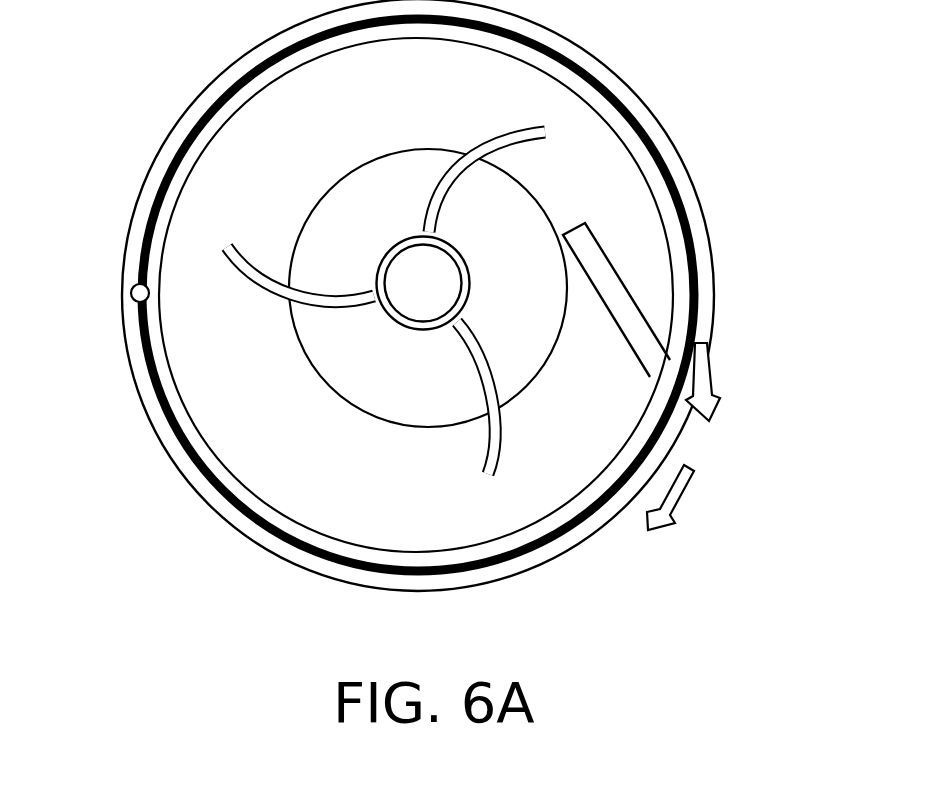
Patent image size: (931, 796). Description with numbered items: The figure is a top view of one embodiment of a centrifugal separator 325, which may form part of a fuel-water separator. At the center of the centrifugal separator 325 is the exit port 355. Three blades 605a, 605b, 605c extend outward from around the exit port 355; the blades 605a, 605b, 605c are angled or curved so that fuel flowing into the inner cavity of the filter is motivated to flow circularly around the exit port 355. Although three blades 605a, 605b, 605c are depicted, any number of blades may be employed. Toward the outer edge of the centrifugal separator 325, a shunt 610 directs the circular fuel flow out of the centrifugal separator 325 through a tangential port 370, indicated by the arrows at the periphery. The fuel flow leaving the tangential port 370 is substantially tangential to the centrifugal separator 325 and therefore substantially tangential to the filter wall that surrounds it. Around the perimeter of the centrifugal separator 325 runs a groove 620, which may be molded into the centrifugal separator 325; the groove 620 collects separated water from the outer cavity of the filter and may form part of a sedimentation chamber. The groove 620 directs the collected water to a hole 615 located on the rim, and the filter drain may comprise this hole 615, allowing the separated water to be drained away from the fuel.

The centrifugal separator 325 is at (215, 511).
The exit port 355 is at (471, 278).
The tangential port 370 is at (714, 312).
The blade 605a is at (225, 245).
The blade 605b is at (549, 130).
The blade 605c is at (488, 472).
The shunt 610 is at (587, 227).
The hole 615 is at (131, 292).
The groove 620 is at (156, 418).